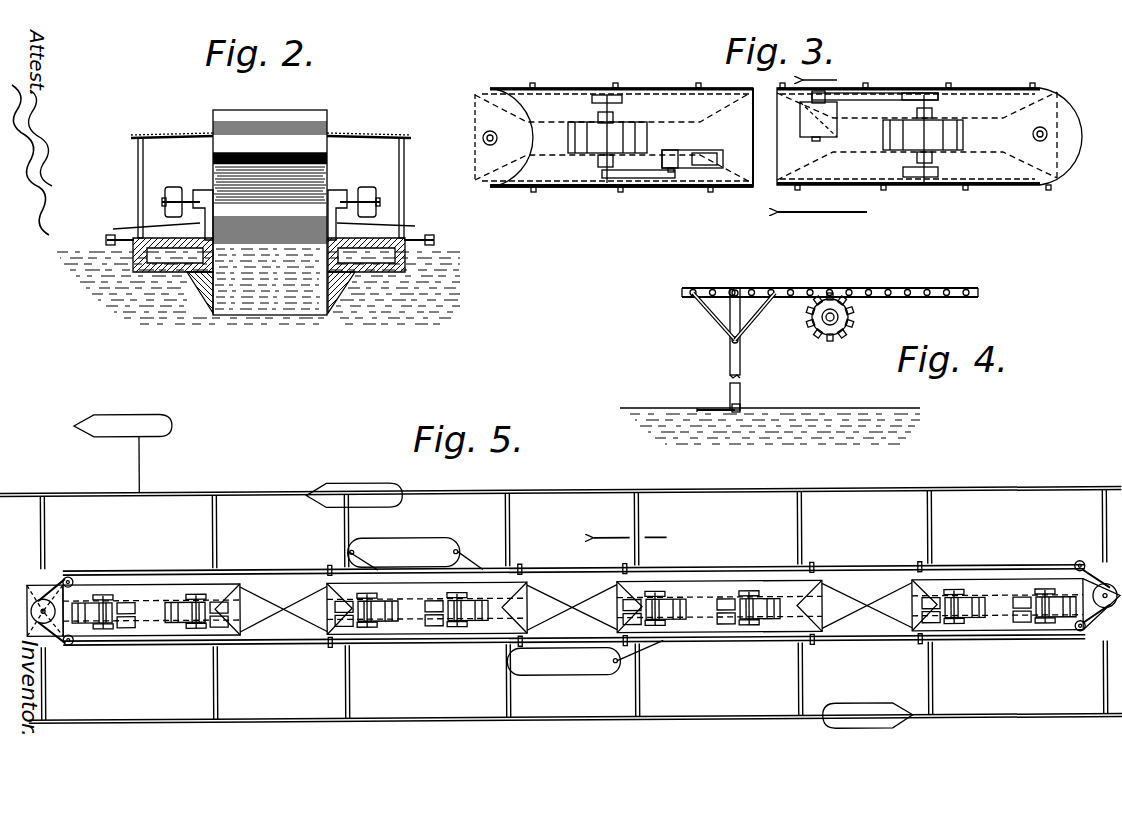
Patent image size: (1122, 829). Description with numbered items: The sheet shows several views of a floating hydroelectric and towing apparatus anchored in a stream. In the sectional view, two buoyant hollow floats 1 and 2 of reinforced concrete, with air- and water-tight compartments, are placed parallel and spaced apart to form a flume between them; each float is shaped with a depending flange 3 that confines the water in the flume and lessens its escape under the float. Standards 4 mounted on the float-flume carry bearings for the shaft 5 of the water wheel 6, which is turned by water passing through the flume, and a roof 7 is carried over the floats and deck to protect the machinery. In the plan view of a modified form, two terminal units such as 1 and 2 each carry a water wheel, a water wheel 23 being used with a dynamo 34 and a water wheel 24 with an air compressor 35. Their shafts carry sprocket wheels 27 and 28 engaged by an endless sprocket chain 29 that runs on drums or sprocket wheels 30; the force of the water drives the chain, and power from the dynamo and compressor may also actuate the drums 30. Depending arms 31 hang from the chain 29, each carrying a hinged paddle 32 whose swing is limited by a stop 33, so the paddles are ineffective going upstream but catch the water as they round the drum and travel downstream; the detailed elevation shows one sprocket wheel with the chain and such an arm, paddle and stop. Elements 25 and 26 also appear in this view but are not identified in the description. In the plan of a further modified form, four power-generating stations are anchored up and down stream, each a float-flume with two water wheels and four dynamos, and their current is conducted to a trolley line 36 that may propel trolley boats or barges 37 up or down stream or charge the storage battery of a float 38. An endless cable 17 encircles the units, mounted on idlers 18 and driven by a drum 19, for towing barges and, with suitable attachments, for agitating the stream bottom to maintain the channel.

In FIG. 2, the buoyant hollow float 1 is at (150, 273).
In FIG. 3, the buoyant hollow float 1 is at (560, 107).
In FIG. 2, the buoyant hollow float 2 is at (390, 273).
In FIG. 3, the buoyant hollow float 2 is at (553, 180).
In FIG. 2, the depending flange 3 is at (207, 306).
In FIG. 2, the standard 4 is at (260, 226).
In FIG. 2, the shaft 5 is at (350, 198).
In FIG. 2, the water wheel 6 is at (283, 133).
In FIG. 2, the roof 7 is at (360, 137).
In FIG. 2, the endless cable 17 is at (106, 240).
In FIG. 5, the endless cable 17 is at (733, 558).
In FIG. 5, the idler 18 is at (70, 577).
In FIG. 5, the drum 19 is at (1105, 611).
In FIG. 3, the water wheel 23 is at (952, 127).
In FIG. 3, the water wheel 24 is at (598, 143).
In FIG. 3, the lower sprocket pulley 25 is at (937, 166).
In FIG. 4, the lower sprocket pulley 25 is at (821, 317).
In FIG. 3, the upper pulley 26 is at (618, 108).
In FIG. 3, the sprocket wheel 27 is at (919, 187).
In FIG. 4, the sprocket wheel 27 is at (849, 317).
In FIG. 3, the sprocket wheel 28 is at (610, 188).
In FIG. 3, the endless sprocket chain 29 is at (750, 188).
In FIG. 4, the endless sprocket chain 29 is at (900, 290).
In FIG. 3, the drum 30 is at (463, 110).
In FIG. 3, the depending arm 31 is at (455, 178).
In FIG. 4, the depending arm 31 is at (731, 357).
In FIG. 4, the paddle 32 is at (720, 410).
In FIG. 4, the stop 33 is at (738, 411).
In FIG. 3, the dynamo 34 is at (805, 125).
In FIG. 3, the air compressor 35 is at (705, 157).
In FIG. 5, the trolley line 36 is at (1010, 480).
In FIG. 5, the trolley boat 37 is at (358, 486).
In FIG. 5, the float 38 is at (152, 420).